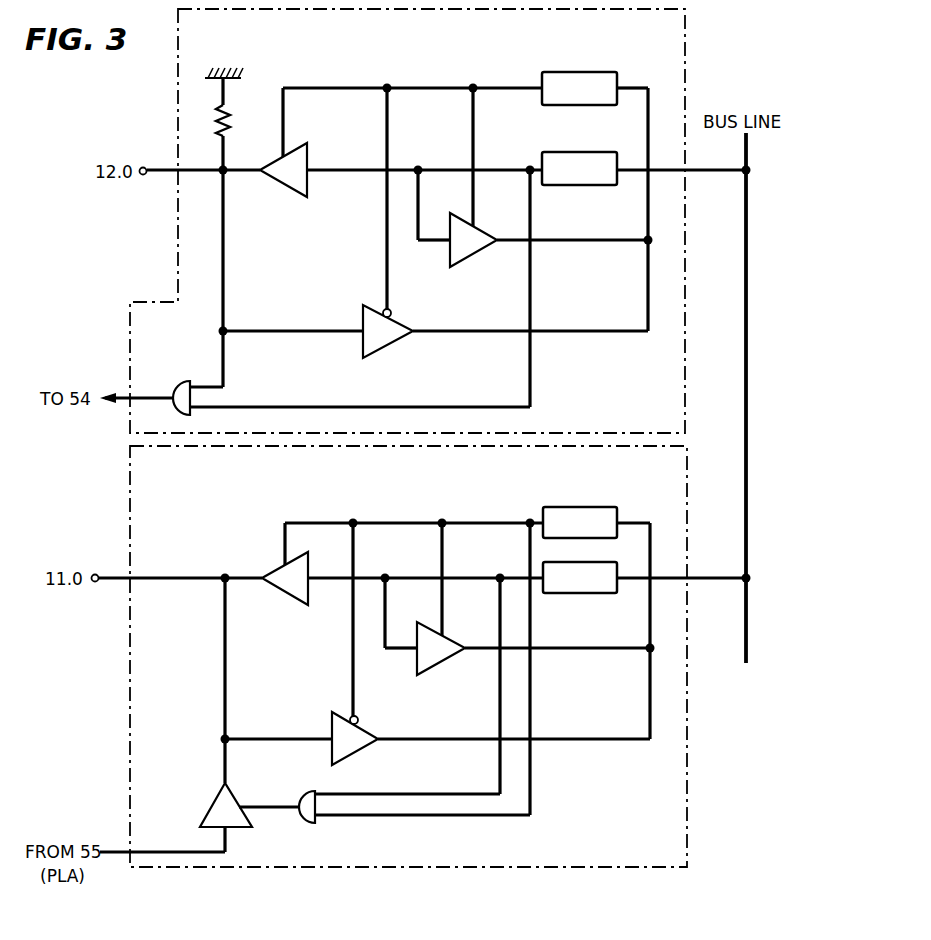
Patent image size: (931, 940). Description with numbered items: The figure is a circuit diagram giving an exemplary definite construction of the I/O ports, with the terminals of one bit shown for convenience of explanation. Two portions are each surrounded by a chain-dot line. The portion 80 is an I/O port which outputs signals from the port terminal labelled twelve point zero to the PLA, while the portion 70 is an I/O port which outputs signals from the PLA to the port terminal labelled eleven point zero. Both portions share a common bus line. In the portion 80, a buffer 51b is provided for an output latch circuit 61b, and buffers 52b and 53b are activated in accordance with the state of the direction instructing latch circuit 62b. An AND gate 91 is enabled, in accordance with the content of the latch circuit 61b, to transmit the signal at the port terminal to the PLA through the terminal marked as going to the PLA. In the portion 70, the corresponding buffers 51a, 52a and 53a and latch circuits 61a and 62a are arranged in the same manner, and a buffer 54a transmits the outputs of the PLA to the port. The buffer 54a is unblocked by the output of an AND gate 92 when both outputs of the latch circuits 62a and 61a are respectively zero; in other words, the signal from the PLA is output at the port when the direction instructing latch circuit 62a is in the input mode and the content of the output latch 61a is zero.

The I/O port portion 80 is at (686, 40).
The I/O port portion 70 is at (688, 733).
The buffer 51b is at (283, 183).
The buffer 52b is at (470, 255).
The buffer 53b is at (385, 345).
The output latch circuit 61b is at (578, 185).
The direction instructing latch circuit 62b is at (590, 72).
The AND gate 91 is at (182, 385).
The buffer 51a is at (283, 591).
The buffer 52a is at (440, 662).
The buffer 53a is at (355, 752).
The buffer 54a is at (212, 800).
The output latch circuit 61a is at (577, 593).
The direction instructing latch circuit 62a is at (590, 507).
The AND gate 92 is at (304, 790).